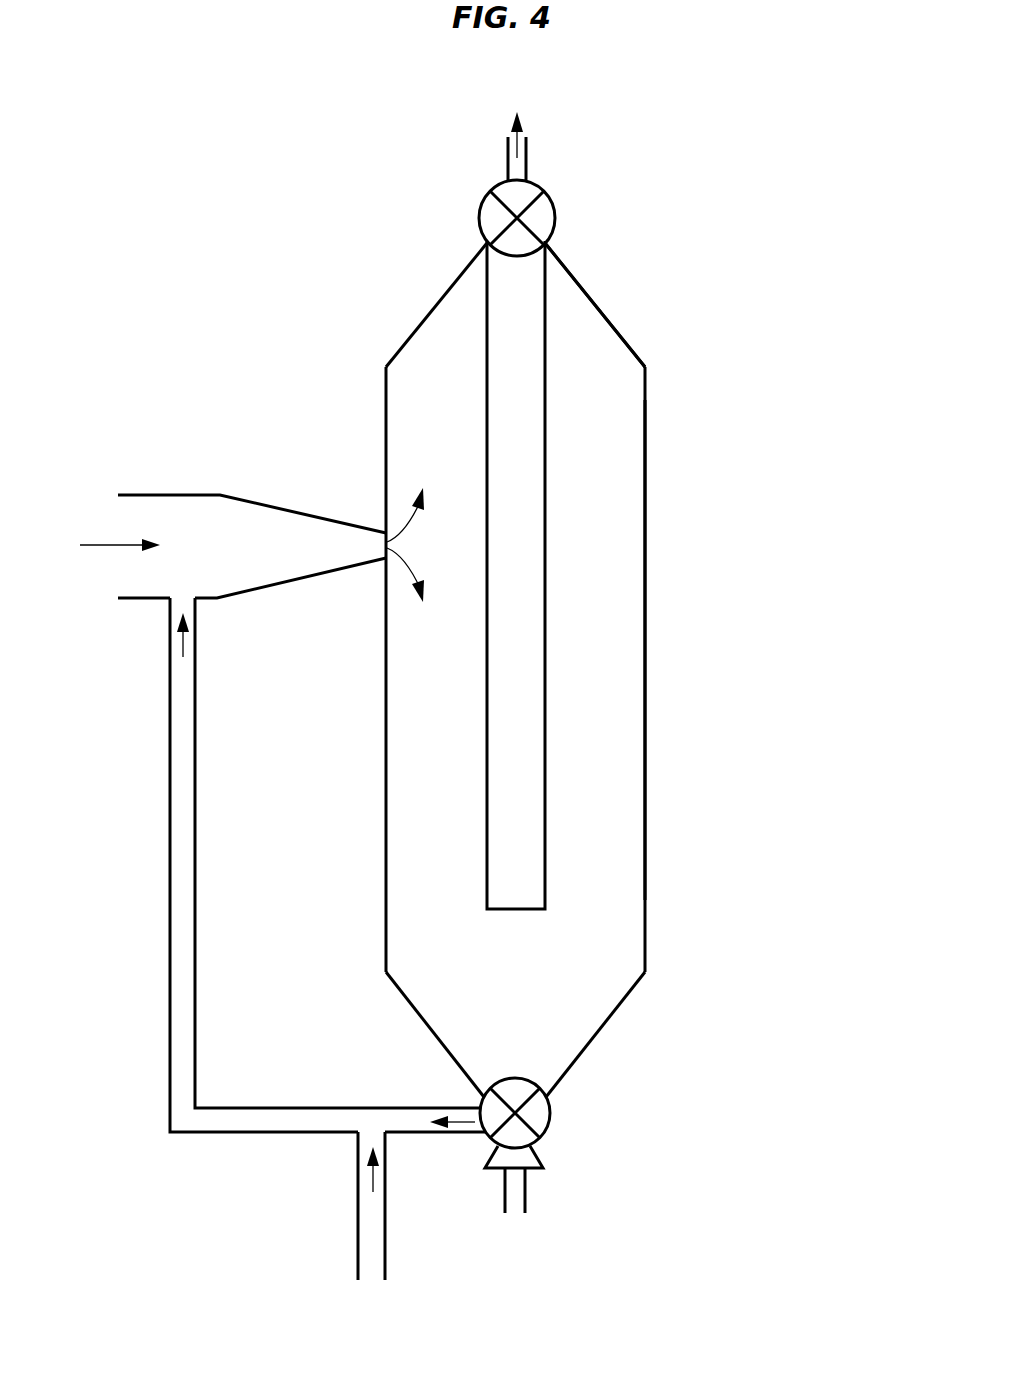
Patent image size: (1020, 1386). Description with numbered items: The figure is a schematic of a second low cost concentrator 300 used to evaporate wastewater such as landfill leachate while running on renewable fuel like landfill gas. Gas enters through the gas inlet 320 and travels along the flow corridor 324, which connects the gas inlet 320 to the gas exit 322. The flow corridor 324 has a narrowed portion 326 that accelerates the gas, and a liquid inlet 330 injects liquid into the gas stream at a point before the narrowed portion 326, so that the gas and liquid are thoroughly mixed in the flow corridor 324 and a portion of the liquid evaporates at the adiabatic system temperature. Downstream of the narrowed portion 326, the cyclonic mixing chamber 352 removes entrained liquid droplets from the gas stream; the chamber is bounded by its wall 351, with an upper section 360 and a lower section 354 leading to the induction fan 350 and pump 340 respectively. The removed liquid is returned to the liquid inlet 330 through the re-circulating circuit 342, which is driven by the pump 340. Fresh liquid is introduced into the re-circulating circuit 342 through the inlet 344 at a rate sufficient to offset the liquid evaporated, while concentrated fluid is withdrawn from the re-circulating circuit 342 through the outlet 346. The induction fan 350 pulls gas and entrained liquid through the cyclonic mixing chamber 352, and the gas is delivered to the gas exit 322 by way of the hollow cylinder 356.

The low cost concentrator 300 is at (740, 272).
The gas inlet 320 is at (115, 505).
The gas exit 322 is at (527, 133).
The flow corridor 324 is at (288, 563).
The narrowed portion 326 is at (360, 542).
The liquid inlet 330 is at (200, 603).
The pump 340 is at (545, 1125).
The re-circulating circuit 342 is at (222, 1076).
The inlet 344 is at (380, 1265).
The outlet 346 is at (515, 1217).
The induction fan 350 is at (555, 205).
The vessel wall 351 is at (645, 562).
The cyclonic mixing chamber 352 is at (615, 753).
The bottom valve 354 is at (555, 1088).
The hollow cylinder 356 is at (545, 658).
The upper conical section 360 is at (565, 260).